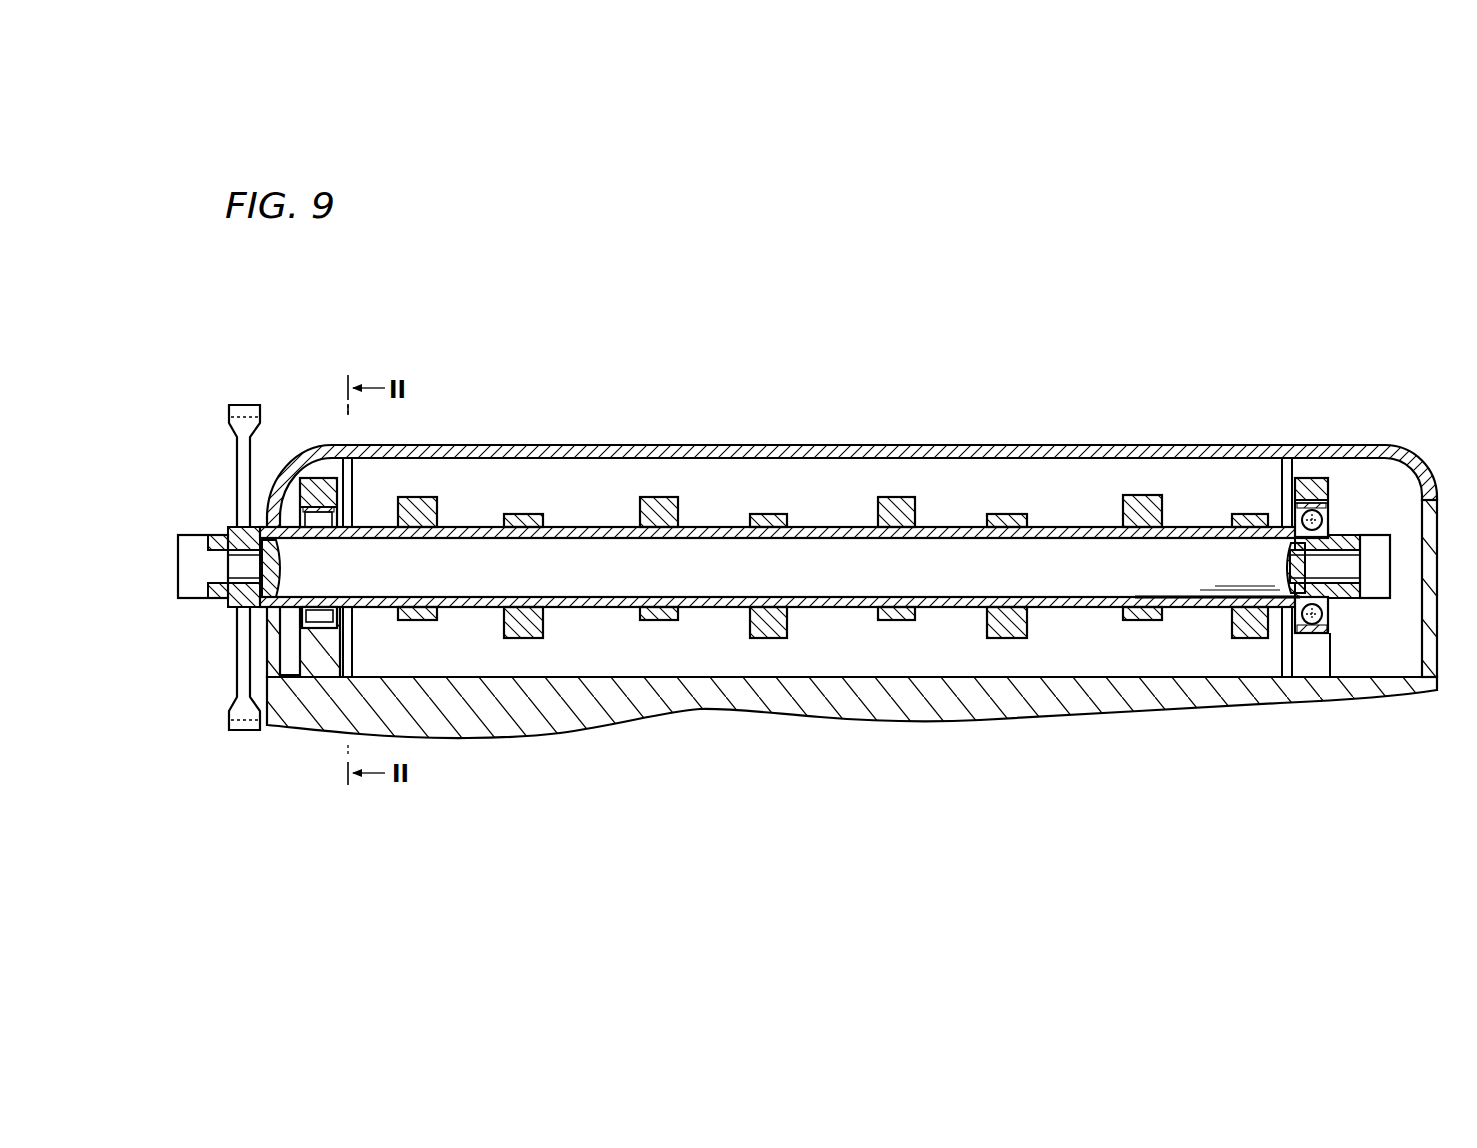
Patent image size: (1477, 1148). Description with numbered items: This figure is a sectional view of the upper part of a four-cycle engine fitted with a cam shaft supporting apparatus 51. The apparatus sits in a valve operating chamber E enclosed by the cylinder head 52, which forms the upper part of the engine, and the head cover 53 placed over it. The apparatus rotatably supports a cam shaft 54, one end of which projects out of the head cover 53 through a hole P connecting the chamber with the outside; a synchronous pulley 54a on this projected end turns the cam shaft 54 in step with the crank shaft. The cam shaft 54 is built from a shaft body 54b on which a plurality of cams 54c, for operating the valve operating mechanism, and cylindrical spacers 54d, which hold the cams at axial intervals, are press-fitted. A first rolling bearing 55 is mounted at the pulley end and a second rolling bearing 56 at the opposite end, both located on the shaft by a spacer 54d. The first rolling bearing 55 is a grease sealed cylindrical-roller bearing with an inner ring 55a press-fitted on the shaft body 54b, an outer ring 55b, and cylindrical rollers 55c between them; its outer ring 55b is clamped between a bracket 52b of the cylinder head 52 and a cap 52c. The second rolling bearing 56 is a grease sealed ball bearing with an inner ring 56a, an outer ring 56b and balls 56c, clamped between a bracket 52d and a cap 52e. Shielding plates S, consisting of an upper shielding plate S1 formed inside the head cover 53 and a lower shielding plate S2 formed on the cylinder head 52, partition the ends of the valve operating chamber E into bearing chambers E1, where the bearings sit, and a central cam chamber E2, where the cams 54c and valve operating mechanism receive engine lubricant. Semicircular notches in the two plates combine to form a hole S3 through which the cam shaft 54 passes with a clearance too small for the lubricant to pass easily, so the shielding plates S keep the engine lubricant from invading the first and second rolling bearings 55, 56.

The cam shaft supporting apparatus 51 is at (1381, 500).
The cylinder head 52 is at (1075, 737).
The bracket 52b is at (345, 650).
The cap 52c is at (297, 478).
The bracket 52d is at (1310, 657).
The cap 52e is at (1284, 460).
The head cover 53 is at (1080, 445).
The cam shaft 54 is at (600, 524).
The synchronous pulley 54a is at (240, 450).
The shaft body 54b is at (1180, 577).
The cams 54c is at (905, 622).
The cylindrical spacers 54d is at (645, 612).
The first rolling bearing 55 is at (299, 504).
The inner ring 55a is at (210, 572).
The outer ring 55b is at (328, 662).
The cylindrical rollers 55c is at (327, 478).
The second rolling bearing 56 is at (1334, 509).
The inner ring 56a is at (1393, 637).
The outer ring 56b is at (1328, 632).
The balls 56c is at (1320, 474).
The valve operating chamber E is at (832, 479).
The bearing chambers E1 is at (290, 624).
The cam chamber E2 is at (740, 485).
The shielding plates S is at (366, 485).
The upper shielding plate S1 is at (356, 497).
The lower shielding plate S2 is at (407, 612).
The hole S3 is at (460, 610).
The hole P is at (232, 608).